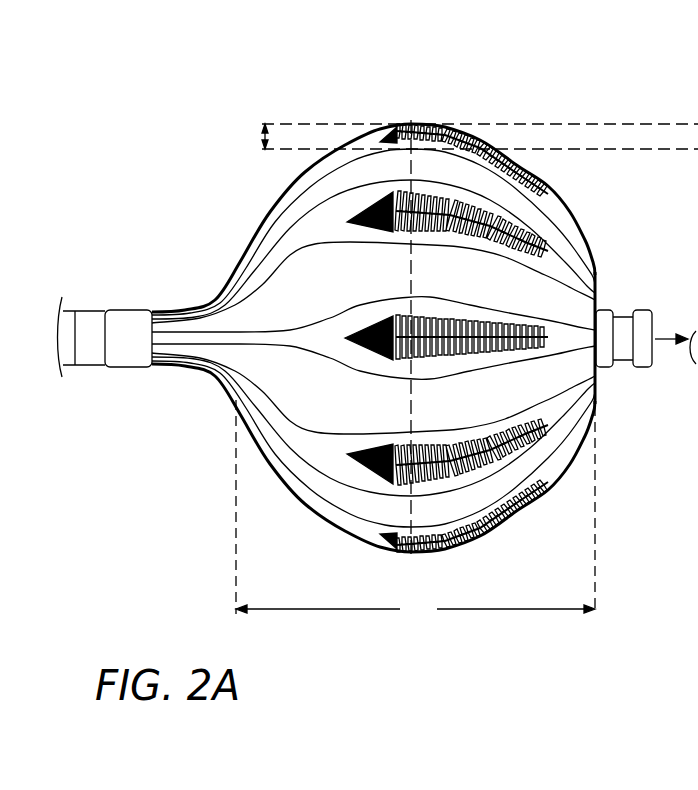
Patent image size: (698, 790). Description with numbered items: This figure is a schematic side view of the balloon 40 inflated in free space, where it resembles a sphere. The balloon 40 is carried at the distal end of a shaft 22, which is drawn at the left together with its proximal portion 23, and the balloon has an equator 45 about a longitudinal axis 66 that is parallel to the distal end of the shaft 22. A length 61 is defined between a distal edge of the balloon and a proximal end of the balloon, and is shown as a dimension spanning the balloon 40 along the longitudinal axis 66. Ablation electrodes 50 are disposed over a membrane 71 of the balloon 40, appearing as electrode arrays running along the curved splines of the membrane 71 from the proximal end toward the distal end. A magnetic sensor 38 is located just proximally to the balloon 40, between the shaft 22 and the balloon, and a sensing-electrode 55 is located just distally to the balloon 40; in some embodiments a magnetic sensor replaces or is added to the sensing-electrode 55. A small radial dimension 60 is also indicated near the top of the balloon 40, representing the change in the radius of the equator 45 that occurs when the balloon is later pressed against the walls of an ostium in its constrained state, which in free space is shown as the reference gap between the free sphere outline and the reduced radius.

The shaft 22 is at (90, 367).
The catheter lumen / proximal shaft 23 is at (72, 310).
The magnetic sensor 38 is at (128, 310).
The balloon 40 is at (240, 207).
The equator 45 is at (409, 271).
The ablation electrodes 50 is at (430, 230).
The sensing-electrode 55 is at (625, 310).
The change in the radius 60 is at (262, 137).
The length 61 is at (415, 512).
The longitudinal axis 66 is at (670, 348).
The membrane 71 is at (566, 207).